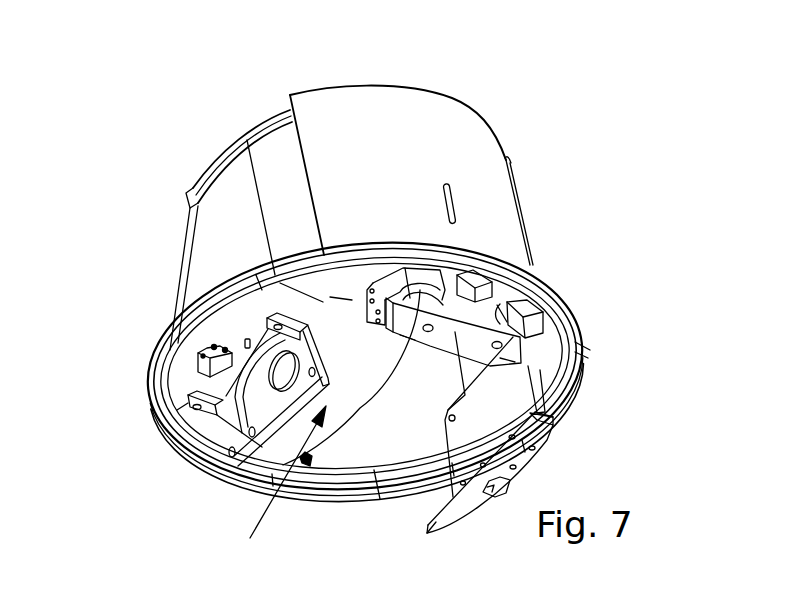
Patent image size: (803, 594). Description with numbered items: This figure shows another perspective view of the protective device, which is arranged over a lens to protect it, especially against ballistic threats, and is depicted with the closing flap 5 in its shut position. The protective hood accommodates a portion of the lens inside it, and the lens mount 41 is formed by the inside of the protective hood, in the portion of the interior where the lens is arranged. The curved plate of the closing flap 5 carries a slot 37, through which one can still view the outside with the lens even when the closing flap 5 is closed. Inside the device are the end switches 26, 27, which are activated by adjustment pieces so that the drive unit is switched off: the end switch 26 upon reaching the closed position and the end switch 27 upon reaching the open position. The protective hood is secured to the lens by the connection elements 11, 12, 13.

The closing flap 5 is at (403, 98).
The slot 37 is at (450, 197).
The end switch 26 is at (477, 282).
The end switch 27 is at (208, 362).
The connection element 13 is at (232, 428).
The lens mount 41 is at (280, 485).
The connection element 12 is at (457, 332).
The connection element 11 is at (540, 440).